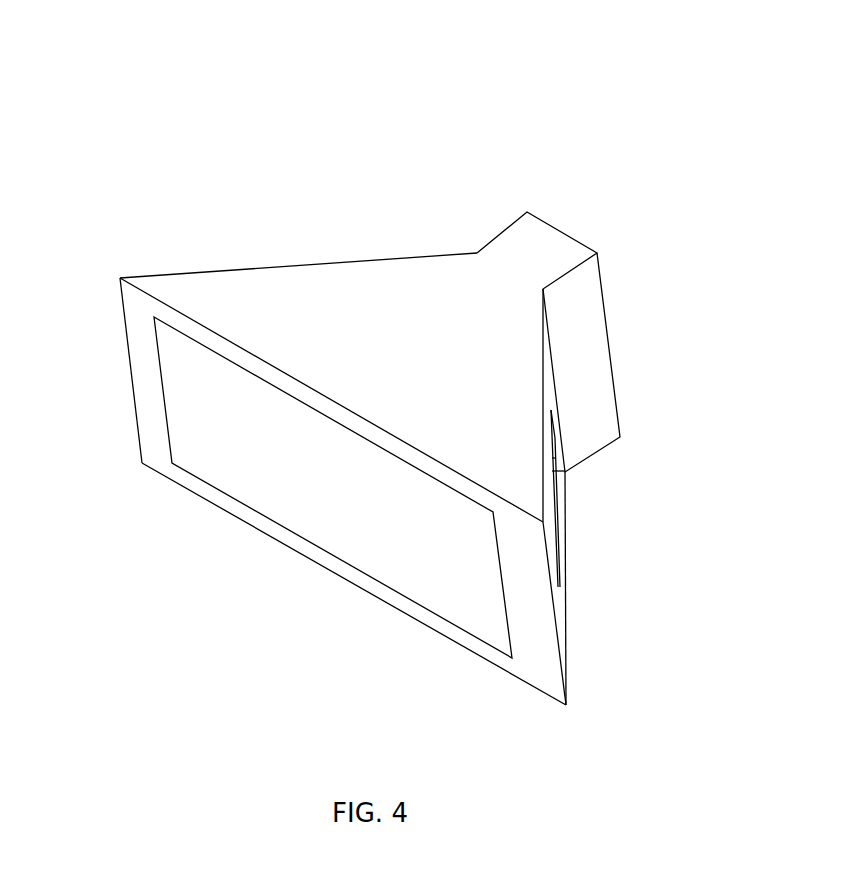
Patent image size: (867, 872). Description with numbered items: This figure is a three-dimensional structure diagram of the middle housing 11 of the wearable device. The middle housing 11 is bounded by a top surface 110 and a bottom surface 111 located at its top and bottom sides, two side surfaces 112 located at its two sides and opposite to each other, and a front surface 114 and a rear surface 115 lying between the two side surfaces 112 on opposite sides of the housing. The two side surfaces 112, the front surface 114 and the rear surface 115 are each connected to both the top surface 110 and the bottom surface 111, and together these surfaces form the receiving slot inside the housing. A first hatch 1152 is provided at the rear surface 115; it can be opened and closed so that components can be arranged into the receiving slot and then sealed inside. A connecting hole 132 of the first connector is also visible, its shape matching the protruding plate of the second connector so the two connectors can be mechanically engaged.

The middle housing 11 is at (372, 359).
The top surface 110 is at (407, 433).
The bottom surface 111 is at (307, 511).
The side surfaces 112 is at (259, 267).
The front surface 114 is at (578, 240).
The rear surface 115 is at (157, 421).
The first hatch 1152 is at (230, 450).
The connecting hole 132 is at (552, 476).